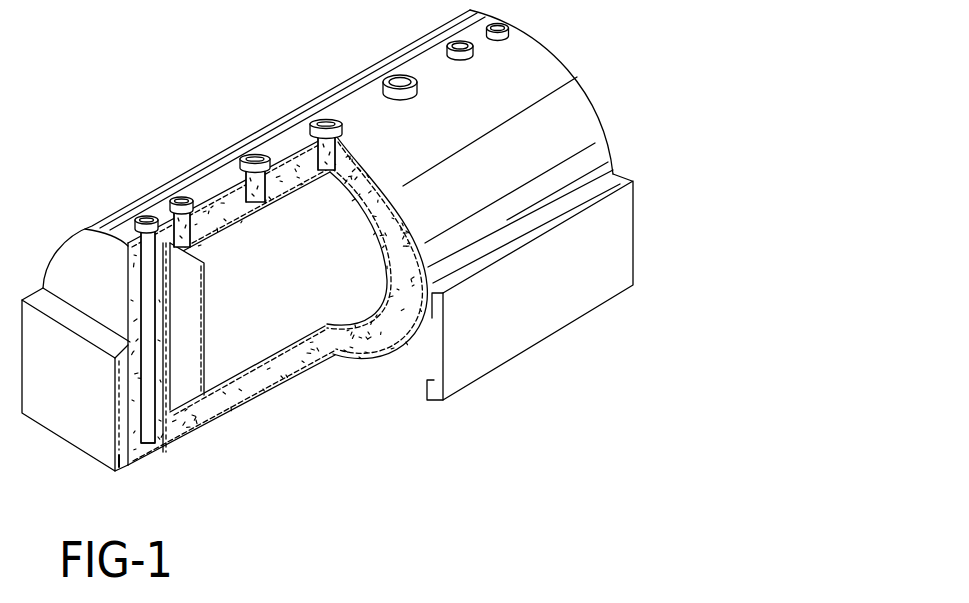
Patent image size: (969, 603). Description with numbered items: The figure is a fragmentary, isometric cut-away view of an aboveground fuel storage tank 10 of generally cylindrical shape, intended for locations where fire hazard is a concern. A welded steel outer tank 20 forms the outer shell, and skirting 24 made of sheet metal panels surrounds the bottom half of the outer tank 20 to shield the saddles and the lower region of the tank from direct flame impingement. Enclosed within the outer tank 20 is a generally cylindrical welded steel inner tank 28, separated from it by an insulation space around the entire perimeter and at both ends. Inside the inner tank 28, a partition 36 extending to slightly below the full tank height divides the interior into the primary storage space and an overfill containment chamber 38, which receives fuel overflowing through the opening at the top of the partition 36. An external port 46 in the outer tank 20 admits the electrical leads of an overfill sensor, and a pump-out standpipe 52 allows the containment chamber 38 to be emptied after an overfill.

The fuel storage tank 10 is at (626, 38).
The outer tank 20 is at (508, 200).
The skirting 24 is at (532, 325).
The inner tank 28 is at (348, 272).
The partition 36 is at (207, 352).
The overfill containment chamber 38 is at (180, 391).
The external port 46 is at (180, 192).
The pump-out standpipe 52 is at (167, 228).